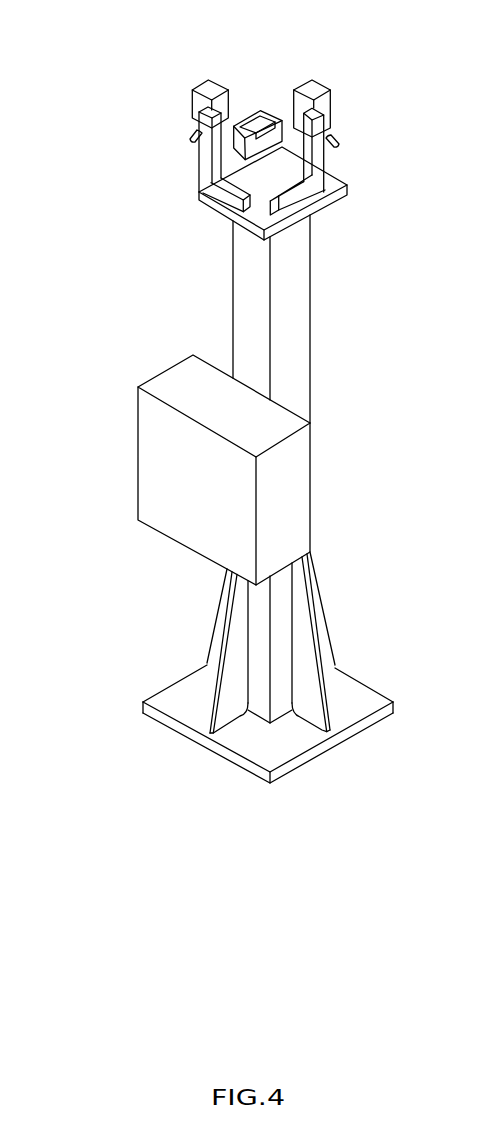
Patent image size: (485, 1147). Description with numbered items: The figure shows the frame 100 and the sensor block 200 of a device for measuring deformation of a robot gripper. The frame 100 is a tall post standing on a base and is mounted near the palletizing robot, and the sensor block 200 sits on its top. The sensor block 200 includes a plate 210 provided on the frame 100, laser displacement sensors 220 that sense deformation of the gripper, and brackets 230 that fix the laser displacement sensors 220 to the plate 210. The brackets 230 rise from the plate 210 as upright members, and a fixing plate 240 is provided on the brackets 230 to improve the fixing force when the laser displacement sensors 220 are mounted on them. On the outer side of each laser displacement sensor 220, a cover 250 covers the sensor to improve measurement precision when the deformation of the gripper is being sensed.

The frame 100 is at (312, 315).
The sensor block 200 is at (87, 120).
The plate 210 is at (194, 200).
The laser displacement sensor 220 is at (192, 105).
The bracket 230 is at (205, 163).
The fixing plate 240 is at (299, 89).
The cover 250 is at (208, 87).